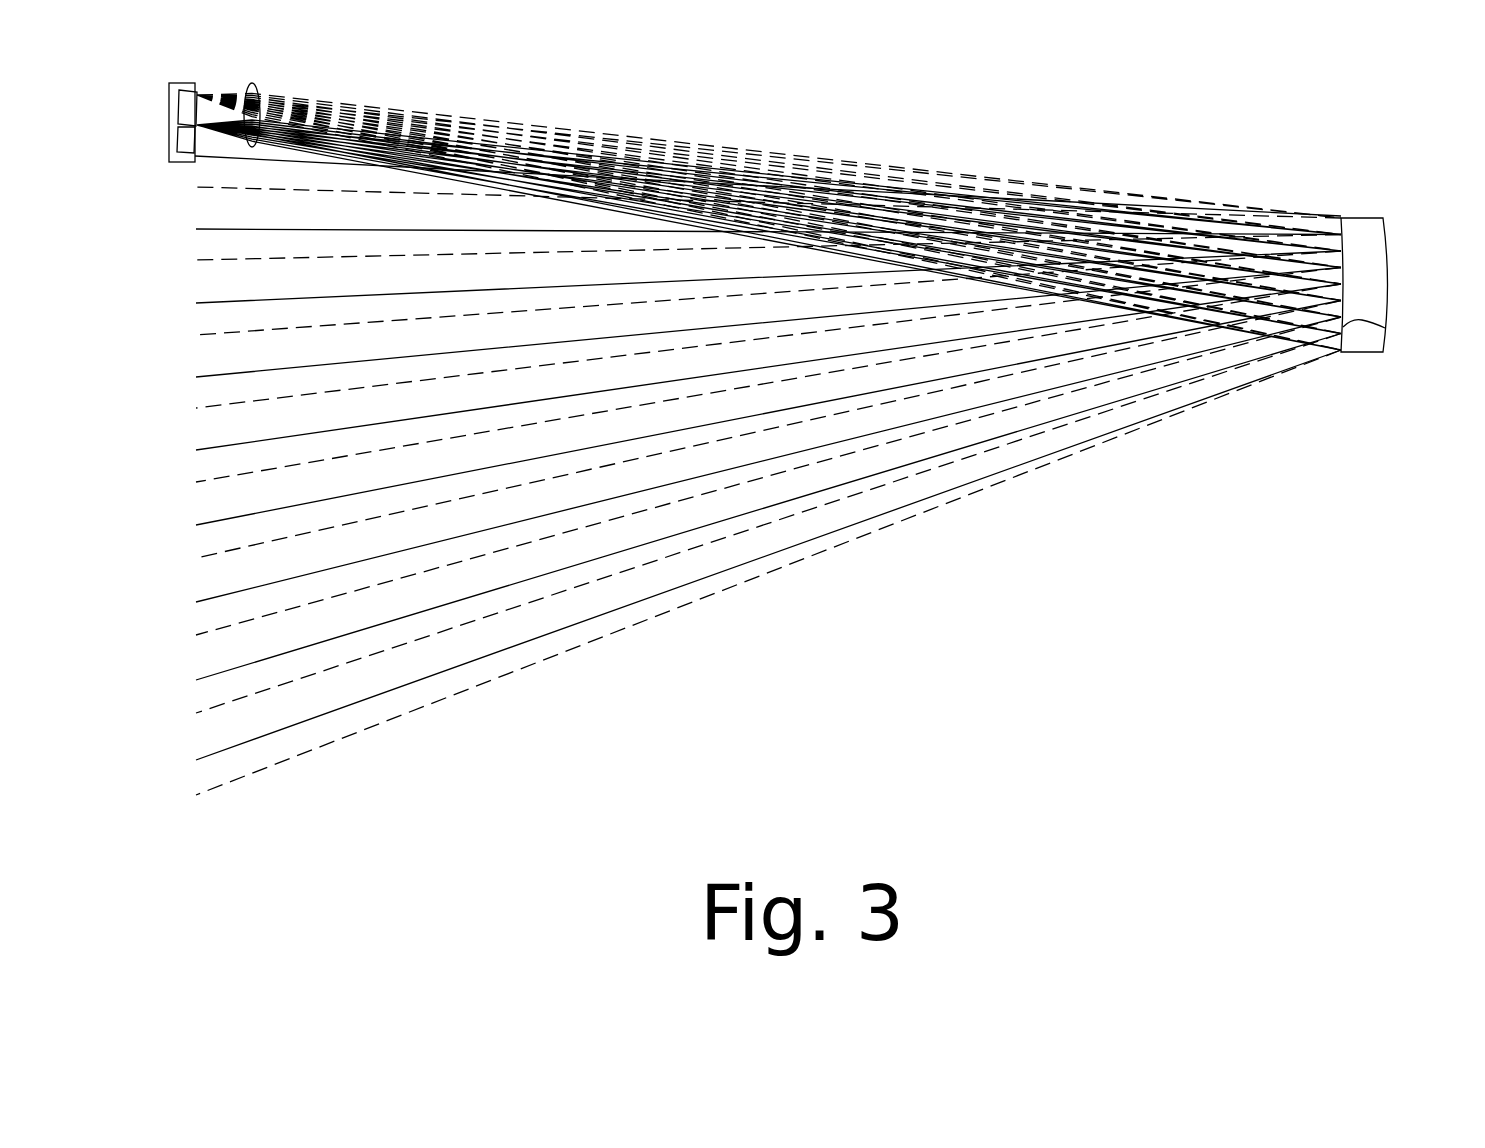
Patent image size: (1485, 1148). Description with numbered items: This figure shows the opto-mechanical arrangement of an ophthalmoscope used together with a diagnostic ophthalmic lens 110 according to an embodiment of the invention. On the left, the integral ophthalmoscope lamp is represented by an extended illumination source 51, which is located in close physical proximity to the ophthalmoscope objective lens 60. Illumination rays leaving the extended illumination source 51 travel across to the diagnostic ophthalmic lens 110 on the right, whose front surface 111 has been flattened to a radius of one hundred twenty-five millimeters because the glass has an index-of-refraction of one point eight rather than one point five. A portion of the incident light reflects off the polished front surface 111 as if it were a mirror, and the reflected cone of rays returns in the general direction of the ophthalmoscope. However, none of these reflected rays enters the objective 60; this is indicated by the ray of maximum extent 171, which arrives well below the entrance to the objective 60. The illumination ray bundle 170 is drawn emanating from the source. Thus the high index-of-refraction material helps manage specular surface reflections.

The extended illumination source 51 is at (170, 108).
The ophthalmoscope objective lens 60 is at (184, 150).
The diagnostic ophthalmic lens 110 is at (1362, 218).
The front surface 111 is at (1386, 331).
The emitted light rays 170 is at (275, 115).
The ray of maximum extent 171 is at (234, 158).